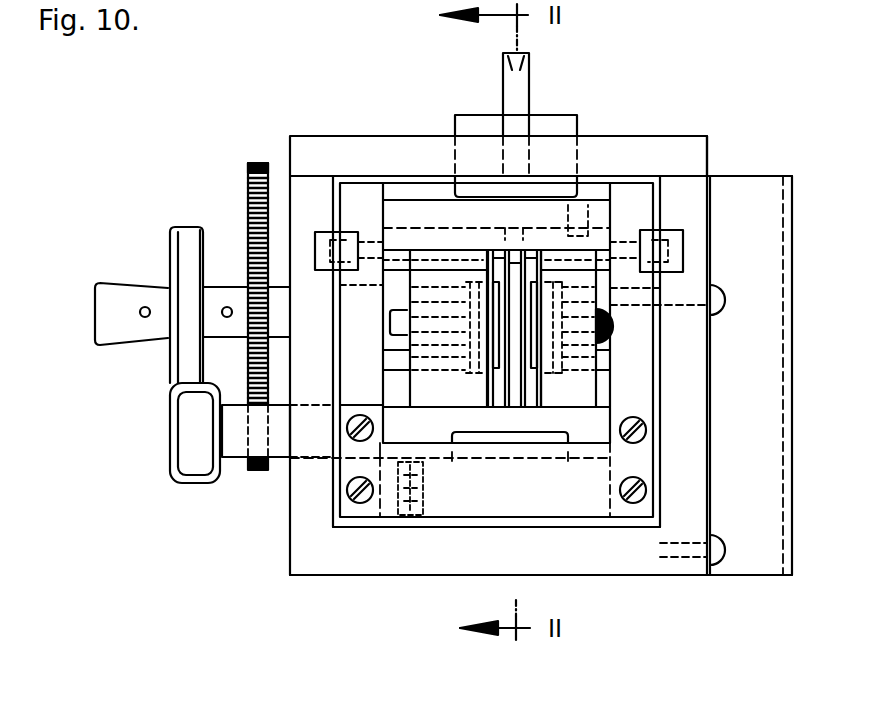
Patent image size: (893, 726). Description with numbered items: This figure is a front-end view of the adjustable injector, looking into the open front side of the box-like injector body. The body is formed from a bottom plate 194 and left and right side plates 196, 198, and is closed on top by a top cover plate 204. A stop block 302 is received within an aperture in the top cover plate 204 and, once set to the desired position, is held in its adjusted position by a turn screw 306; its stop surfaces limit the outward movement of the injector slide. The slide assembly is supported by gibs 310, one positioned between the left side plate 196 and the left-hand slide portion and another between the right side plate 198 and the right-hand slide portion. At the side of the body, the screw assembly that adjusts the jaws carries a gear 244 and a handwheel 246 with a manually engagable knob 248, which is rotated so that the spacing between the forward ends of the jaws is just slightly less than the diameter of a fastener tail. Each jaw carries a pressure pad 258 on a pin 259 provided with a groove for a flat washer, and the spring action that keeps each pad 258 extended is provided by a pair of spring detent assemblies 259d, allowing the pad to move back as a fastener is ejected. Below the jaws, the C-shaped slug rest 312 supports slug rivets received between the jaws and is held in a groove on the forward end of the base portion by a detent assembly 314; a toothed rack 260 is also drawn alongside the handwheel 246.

The bottom plate 194 is at (363, 563).
The left side plate 196 is at (313, 566).
The right side plate 198 is at (687, 568).
The top cover plate 204 is at (367, 143).
The gear 244 is at (248, 282).
The handwheel 246 is at (185, 227).
The knob 248 is at (122, 295).
The pressure pad 258 is at (530, 324).
The pin 259 is at (560, 326).
The spring detent assembly 259d is at (610, 278).
The rack 260 is at (263, 163).
The stop block 302 is at (470, 115).
The turn screw 306 is at (528, 86).
The gib 310 is at (348, 232).
The slug rest 312 is at (236, 457).
The detent assembly 314 is at (425, 488).